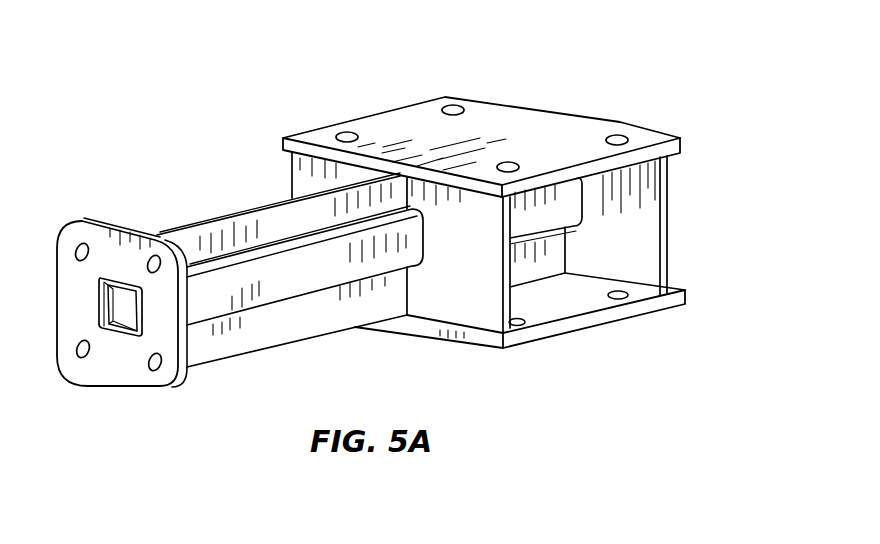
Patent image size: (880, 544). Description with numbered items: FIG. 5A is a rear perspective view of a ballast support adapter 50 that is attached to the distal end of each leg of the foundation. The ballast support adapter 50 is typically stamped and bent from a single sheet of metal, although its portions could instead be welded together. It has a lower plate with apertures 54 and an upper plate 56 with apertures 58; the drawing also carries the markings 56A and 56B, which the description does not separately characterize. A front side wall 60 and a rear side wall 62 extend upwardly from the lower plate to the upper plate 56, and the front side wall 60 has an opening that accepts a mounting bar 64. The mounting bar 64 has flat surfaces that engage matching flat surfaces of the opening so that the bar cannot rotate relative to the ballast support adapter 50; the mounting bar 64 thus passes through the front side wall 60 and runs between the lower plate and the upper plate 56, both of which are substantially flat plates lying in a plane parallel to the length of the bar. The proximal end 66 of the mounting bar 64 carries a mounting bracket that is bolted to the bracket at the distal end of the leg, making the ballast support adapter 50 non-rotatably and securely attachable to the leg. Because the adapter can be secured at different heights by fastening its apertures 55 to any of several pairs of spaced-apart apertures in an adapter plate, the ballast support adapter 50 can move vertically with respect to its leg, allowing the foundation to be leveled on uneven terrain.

The ballast support adapter 50 is at (332, 43).
The apertures 54 is at (120, 372).
The apertures 55 is at (84, 246).
The upper plate 56 is at (562, 202).
The upper waveguide half 56A is at (245, 228).
The lower waveguide half 56B is at (246, 342).
The apertures 58 is at (528, 126).
The front side wall 60 is at (588, 322).
The rear side wall 62 is at (350, 133).
The mounting bar 64 is at (650, 170).
The proximal end 66 is at (452, 308).